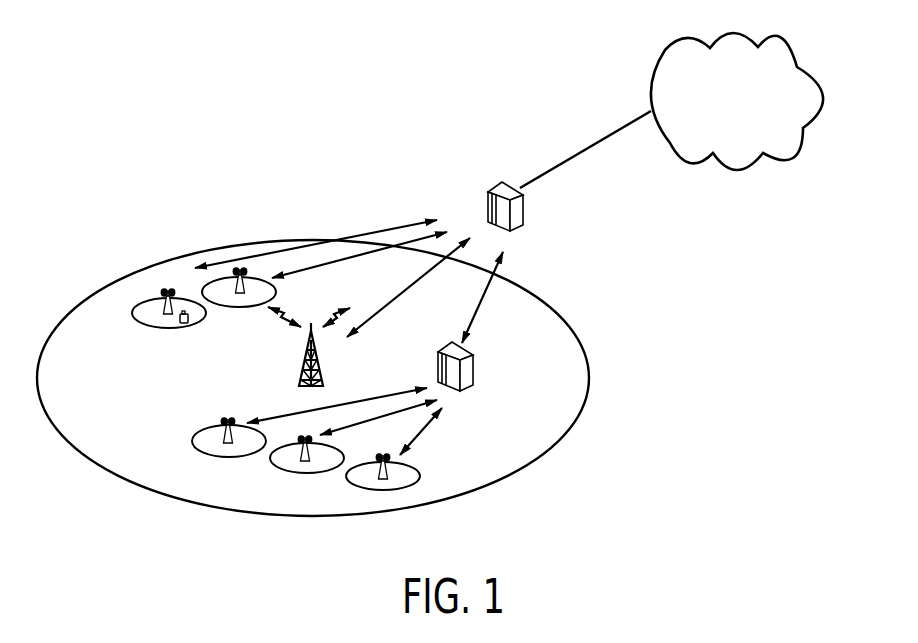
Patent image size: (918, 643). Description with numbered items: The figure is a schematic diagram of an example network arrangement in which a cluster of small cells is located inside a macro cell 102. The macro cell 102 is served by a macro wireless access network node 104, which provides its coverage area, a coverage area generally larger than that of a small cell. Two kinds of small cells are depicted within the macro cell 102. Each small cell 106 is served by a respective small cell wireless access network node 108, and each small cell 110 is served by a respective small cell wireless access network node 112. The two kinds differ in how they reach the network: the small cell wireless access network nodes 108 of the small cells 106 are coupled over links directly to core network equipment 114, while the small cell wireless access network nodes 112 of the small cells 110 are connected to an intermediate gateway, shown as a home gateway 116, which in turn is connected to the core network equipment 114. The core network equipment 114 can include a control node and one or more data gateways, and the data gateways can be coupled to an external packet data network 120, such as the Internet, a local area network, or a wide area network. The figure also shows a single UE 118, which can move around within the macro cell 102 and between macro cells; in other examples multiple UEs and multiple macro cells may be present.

The macro cell 102 is at (478, 487).
The macro wireless access network node 104 is at (303, 383).
The small cell 106 is at (132, 313).
The small cell wireless access network node 108 is at (160, 302).
The small cell 110 is at (203, 456).
The small cell wireless access network node 112 is at (302, 460).
The core network equipment 114 is at (498, 188).
The home gateway 116 is at (472, 362).
The UE 118 is at (180, 322).
The external packet data network 120 is at (672, 49).